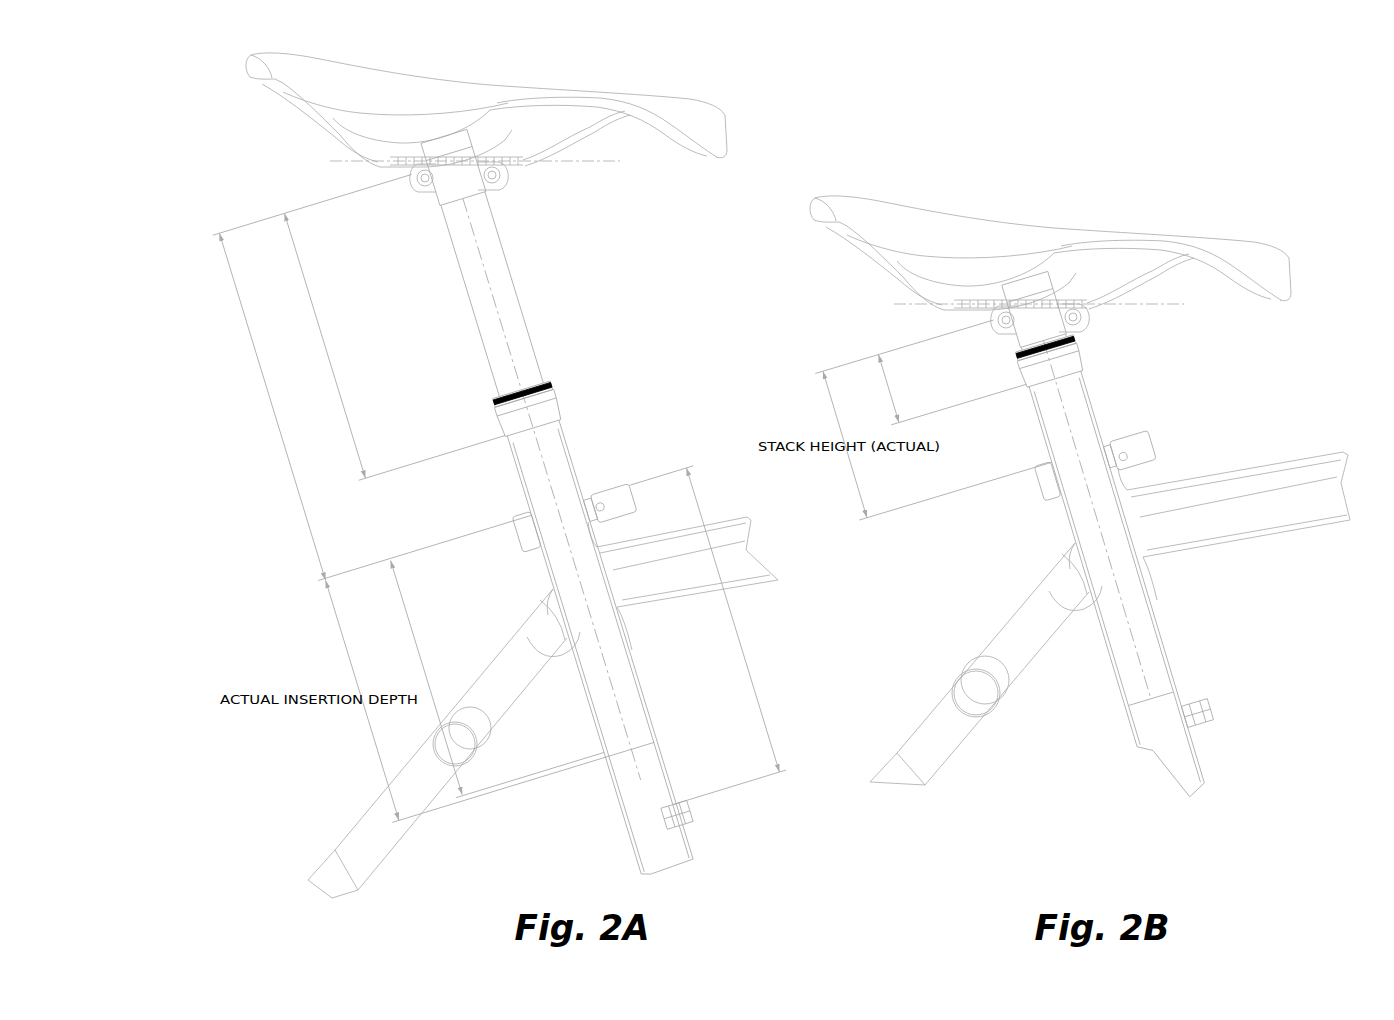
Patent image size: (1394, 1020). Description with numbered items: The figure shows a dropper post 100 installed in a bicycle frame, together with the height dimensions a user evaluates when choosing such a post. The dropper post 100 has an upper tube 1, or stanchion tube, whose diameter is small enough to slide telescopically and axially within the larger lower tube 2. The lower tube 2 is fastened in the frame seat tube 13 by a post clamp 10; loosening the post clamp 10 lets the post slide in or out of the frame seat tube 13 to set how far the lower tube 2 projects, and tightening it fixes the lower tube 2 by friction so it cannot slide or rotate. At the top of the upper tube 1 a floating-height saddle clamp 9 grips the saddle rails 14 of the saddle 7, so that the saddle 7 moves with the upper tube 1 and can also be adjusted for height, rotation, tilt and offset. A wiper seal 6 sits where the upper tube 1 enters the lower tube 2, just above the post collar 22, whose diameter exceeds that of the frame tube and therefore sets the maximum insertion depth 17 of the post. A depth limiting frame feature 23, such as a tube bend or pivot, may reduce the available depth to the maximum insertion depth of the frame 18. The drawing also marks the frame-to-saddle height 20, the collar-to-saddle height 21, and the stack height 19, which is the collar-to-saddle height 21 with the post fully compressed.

In FIG. 2A, the upper tube 1 is at (456, 271).
In FIG. 2B, the upper tube 1 is at (1020, 358).
In FIG. 2A, the lower tube 2 is at (573, 452).
In FIG. 2B, the lower tube 2 is at (1097, 412).
In FIG. 2A, the wiper seal 6 is at (553, 391).
In FIG. 2B, the wiper seal 6 is at (1073, 341).
In FIG. 2A, the saddle 7 is at (461, 80).
In FIG. 2B, the saddle 7 is at (1030, 223).
In FIG. 2A, the saddle clamp 9 is at (418, 192).
In FIG. 2B, the saddle clamp 9 is at (996, 329).
In FIG. 2A, the post clamp 10 is at (620, 494).
In FIG. 2B, the post clamp 10 is at (1148, 443).
In FIG. 2A, the frame seat tube 13 is at (696, 852).
In FIG. 2B, the frame seat tube 13 is at (1118, 466).
In FIG. 2A, the saddle rails 14 is at (580, 152).
In FIG. 2B, the saddle rails 14 is at (1128, 302).
In FIG. 2A, the maximum insertion depth (post) 17 is at (419, 657).
In FIG. 2A, the maximum insertion depth (frame) 18 is at (757, 635).
In FIG. 2B, the stack height 19 is at (895, 370).
In FIG. 2A, the frame-to-saddle height 20 is at (334, 376).
In FIG. 2A, the collar-to-saddle height 21 is at (390, 326).
In FIG. 2A, the post collar 22 is at (562, 398).
In FIG. 2B, the post collar 22 is at (1083, 348).
In FIG. 2A, the depth limiting frame feature 23 is at (672, 803).
In FIG. 2B, the depth limiting frame feature 23 is at (1210, 753).
In FIG. 2A, the dropper post 100 is at (640, 238).
In FIG. 2B, the dropper post 100 is at (1222, 360).